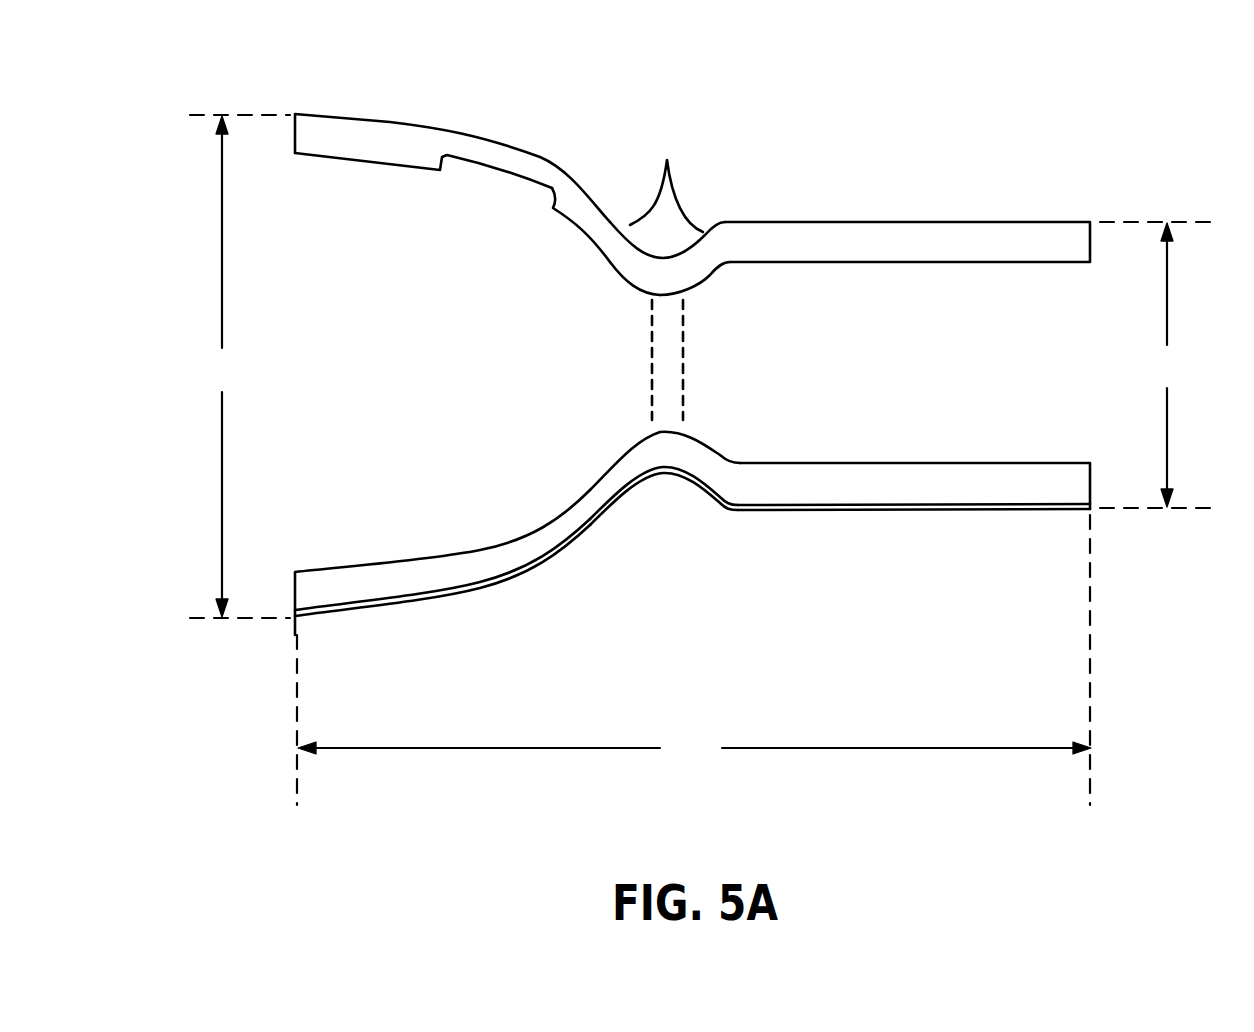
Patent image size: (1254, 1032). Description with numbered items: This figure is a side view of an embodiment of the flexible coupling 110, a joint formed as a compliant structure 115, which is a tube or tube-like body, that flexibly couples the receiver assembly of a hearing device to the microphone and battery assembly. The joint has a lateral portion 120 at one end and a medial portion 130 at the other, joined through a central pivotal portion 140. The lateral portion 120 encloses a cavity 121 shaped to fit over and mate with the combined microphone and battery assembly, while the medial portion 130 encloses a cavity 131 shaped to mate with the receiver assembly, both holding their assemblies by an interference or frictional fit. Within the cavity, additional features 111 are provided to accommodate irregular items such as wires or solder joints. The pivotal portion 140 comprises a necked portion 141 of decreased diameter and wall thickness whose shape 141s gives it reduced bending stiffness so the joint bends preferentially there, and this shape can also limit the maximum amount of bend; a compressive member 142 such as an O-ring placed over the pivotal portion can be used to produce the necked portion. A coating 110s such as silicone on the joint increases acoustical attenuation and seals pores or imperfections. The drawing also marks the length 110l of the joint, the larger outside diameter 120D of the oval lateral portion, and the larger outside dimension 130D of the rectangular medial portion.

The flexible coupling 110 is at (851, 92).
The lateral portion 120 is at (335, 130).
The additional features 111 is at (493, 170).
The necked portion 141 is at (707, 262).
The shape of necked portion 141s is at (666, 178).
The compliant structure 115 is at (912, 237).
The pivotal portion 140 is at (655, 452).
The coating 110s is at (735, 508).
The medial portion 130 is at (885, 486).
The compressive member 142 is at (652, 357).
The cavity 121 is at (425, 374).
The cavity 131 is at (933, 374).
The larger outside diameter 120D is at (239, 366).
The larger outside dimension 130D is at (1160, 365).
The length of the joint 110l is at (694, 660).